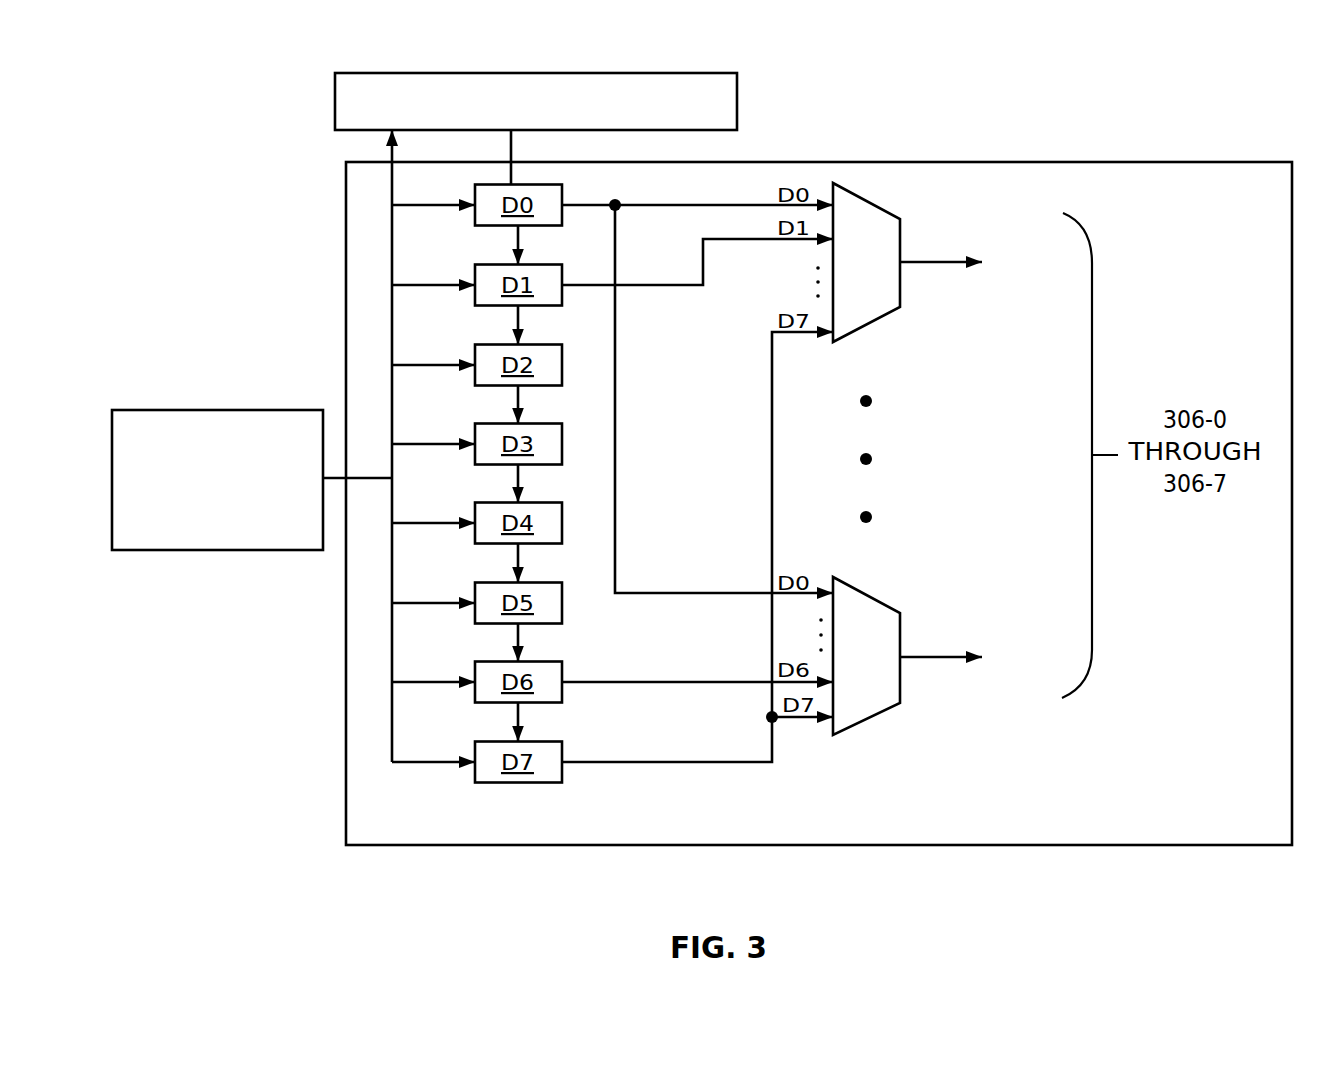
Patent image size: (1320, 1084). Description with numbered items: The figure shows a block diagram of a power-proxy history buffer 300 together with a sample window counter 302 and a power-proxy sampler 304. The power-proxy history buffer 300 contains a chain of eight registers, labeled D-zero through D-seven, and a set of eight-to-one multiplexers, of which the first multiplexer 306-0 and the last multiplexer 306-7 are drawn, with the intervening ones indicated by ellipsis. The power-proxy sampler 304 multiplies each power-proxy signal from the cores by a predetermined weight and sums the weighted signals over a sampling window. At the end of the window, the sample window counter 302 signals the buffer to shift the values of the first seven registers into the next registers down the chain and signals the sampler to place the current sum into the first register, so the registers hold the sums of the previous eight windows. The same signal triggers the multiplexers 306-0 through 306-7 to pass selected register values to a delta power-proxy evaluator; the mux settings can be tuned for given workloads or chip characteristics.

The power-proxy history buffer 300 is at (1058, 162).
The sample window counter 302 is at (283, 408).
The power-proxy sampler 304 is at (507, 72).
The multiplexer 306-0 is at (858, 196).
The multiplexer 306-7 is at (868, 718).